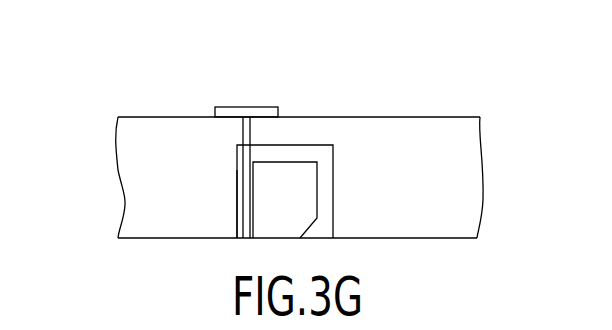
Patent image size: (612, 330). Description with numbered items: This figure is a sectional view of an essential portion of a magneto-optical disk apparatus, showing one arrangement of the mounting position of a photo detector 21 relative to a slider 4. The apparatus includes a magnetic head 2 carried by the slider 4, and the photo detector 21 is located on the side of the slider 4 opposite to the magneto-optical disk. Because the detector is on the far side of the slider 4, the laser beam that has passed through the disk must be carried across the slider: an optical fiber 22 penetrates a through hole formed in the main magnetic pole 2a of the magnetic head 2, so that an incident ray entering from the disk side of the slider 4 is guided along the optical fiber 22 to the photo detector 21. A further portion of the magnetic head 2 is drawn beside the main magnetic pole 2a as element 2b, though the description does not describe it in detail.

The magnetic head 2 is at (318, 145).
The main magnetic pole 2a is at (237, 171).
The component inner body 2b is at (333, 191).
The slider 4 is at (463, 117).
The photo detector 21 is at (246, 107).
The optical fiber 22 is at (243, 203).